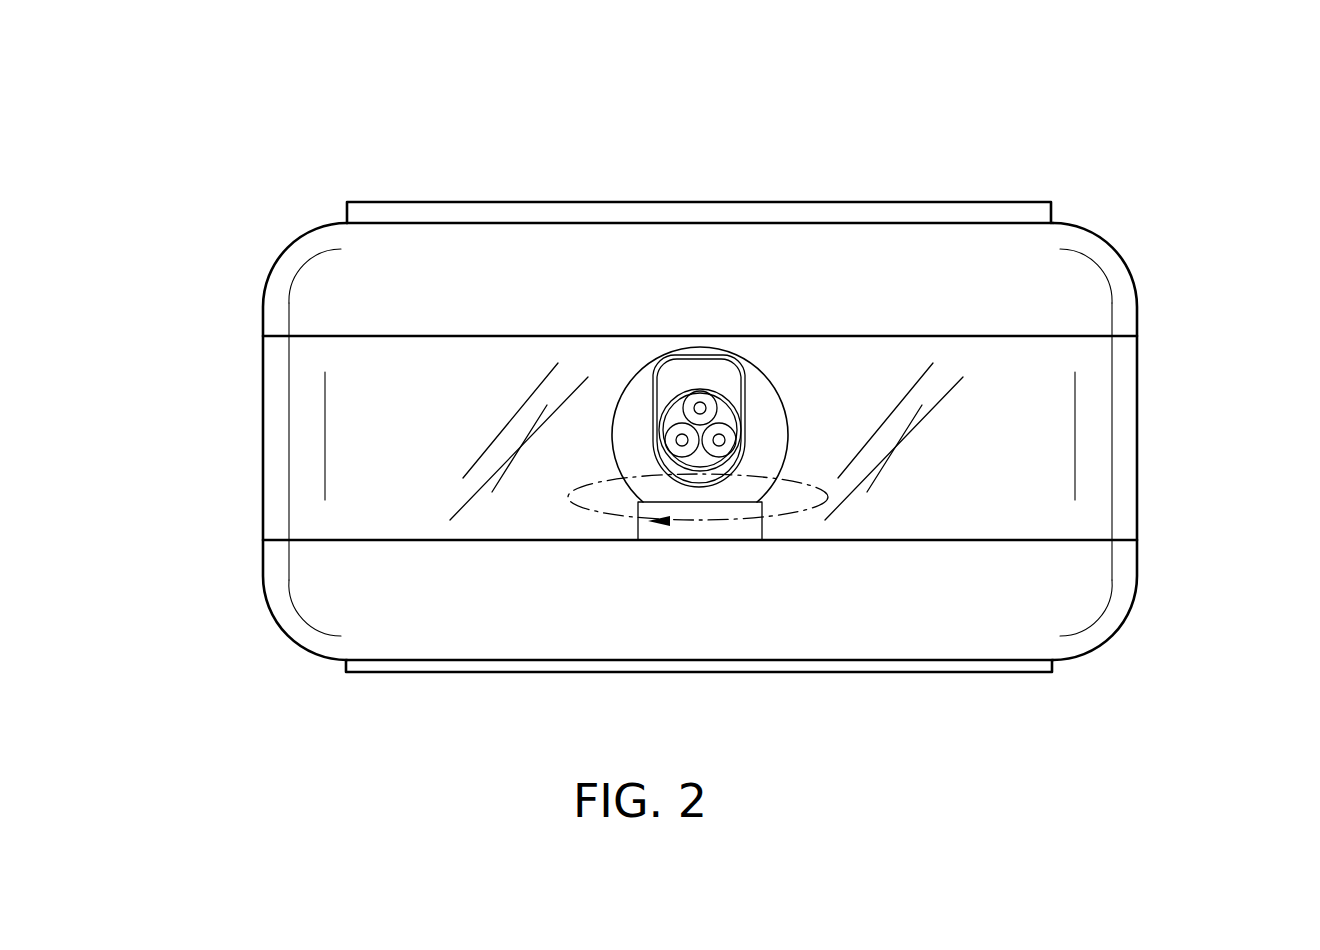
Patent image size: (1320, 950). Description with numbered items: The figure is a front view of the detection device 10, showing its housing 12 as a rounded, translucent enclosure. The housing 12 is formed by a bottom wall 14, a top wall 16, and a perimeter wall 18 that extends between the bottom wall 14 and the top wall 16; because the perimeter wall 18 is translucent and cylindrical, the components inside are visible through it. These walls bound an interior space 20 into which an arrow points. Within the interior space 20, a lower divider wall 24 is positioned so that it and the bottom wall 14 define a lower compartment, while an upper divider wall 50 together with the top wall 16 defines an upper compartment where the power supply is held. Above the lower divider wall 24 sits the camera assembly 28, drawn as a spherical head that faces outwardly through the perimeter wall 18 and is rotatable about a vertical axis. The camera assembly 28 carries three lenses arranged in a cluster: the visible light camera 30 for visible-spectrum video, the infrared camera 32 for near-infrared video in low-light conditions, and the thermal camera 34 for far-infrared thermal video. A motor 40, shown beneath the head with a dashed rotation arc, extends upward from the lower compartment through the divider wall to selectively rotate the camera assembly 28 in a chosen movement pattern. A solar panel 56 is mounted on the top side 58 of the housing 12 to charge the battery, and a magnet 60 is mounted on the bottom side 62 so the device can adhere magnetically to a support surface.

The detection device 10 is at (948, 106).
The housing 12 is at (1158, 452).
The bottom wall 14 is at (1093, 620).
The top wall 16 is at (1090, 262).
The perimeter wall 18 is at (312, 440).
The interior space 20 is at (352, 399).
The lower divider wall 24 is at (393, 540).
The camera assembly 28 is at (816, 433).
The visible light camera 30 is at (700, 402).
The infrared camera 32 is at (719, 440).
The thermal camera 34 is at (682, 440).
The motor 40 is at (642, 508).
The upper divider wall 50 is at (481, 336).
The solar panel 56 is at (487, 208).
The top side 58 is at (510, 224).
The magnet 60 is at (403, 672).
The bottom side 62 is at (583, 660).